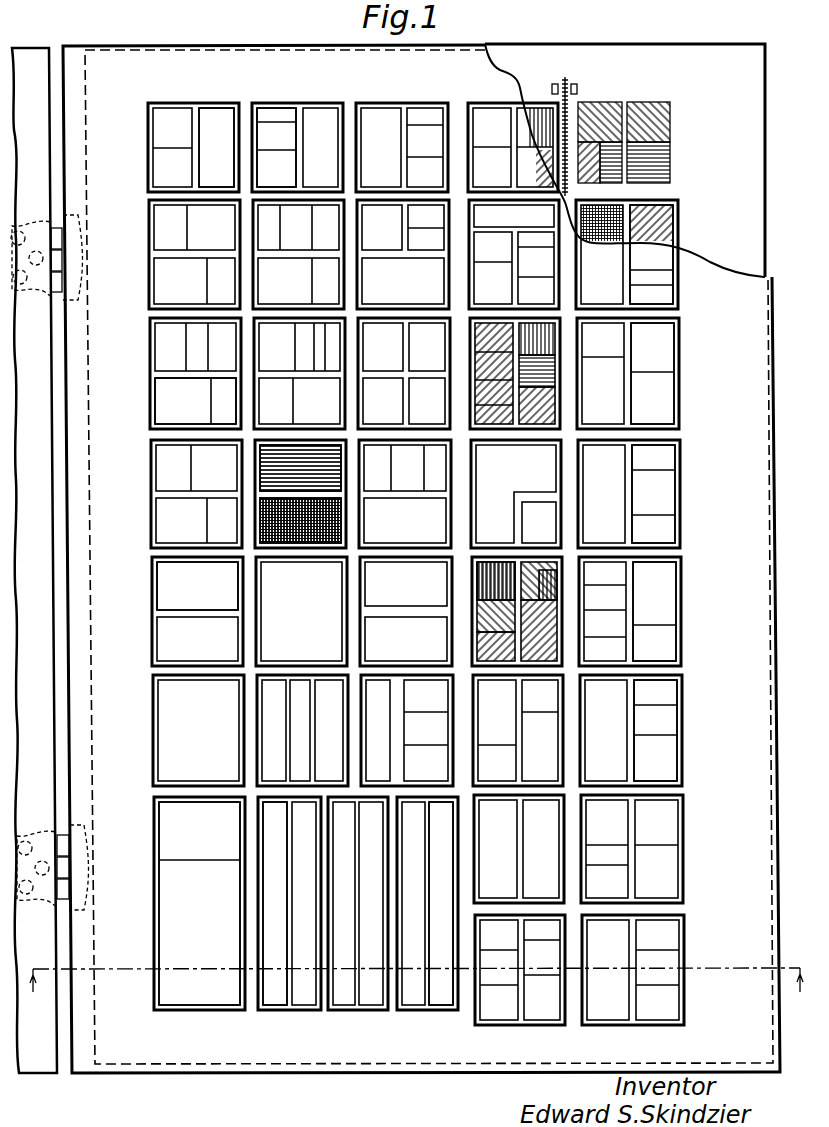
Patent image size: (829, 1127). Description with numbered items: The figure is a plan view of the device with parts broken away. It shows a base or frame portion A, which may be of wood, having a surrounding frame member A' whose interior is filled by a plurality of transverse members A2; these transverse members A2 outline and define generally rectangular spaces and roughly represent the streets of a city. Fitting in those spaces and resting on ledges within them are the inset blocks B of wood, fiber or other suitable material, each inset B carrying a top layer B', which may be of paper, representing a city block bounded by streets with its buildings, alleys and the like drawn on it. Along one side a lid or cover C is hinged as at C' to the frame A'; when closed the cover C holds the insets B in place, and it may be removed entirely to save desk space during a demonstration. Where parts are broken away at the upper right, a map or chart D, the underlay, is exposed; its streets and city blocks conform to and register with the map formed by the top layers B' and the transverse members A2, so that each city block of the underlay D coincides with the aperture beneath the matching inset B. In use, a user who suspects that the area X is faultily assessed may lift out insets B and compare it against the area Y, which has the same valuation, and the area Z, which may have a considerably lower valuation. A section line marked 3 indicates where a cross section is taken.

The base or frame portion A is at (421, 586).
The surrounding frame member A' is at (429, 584).
The transverse members A2 is at (392, 400).
The inset blocks B is at (435, 574).
The top layer B' is at (422, 557).
The lid or cover C is at (34, 570).
The hinge C' is at (50, 562).
The map or chart D is at (615, 68).
The area X is at (595, 373).
The area Y is at (552, 614).
The area Z is at (258, 455).
The section line 3- 3 is at (416, 1001).